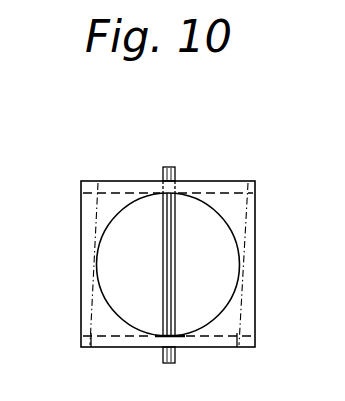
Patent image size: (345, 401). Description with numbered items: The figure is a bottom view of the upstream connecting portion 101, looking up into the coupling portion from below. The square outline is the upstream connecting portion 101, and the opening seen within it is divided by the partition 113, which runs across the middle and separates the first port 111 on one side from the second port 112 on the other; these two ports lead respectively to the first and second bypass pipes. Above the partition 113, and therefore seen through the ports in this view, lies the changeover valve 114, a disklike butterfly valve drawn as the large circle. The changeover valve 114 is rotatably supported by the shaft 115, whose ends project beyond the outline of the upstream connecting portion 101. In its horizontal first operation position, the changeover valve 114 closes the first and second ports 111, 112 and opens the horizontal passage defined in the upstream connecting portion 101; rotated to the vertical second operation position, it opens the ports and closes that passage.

The upstream connecting portion 101 is at (239, 172).
The first port 111 is at (98, 257).
The second port 112 is at (244, 279).
The partition 113 is at (165, 297).
The changeover valve 114 is at (223, 230).
The shaft 115 is at (165, 166).